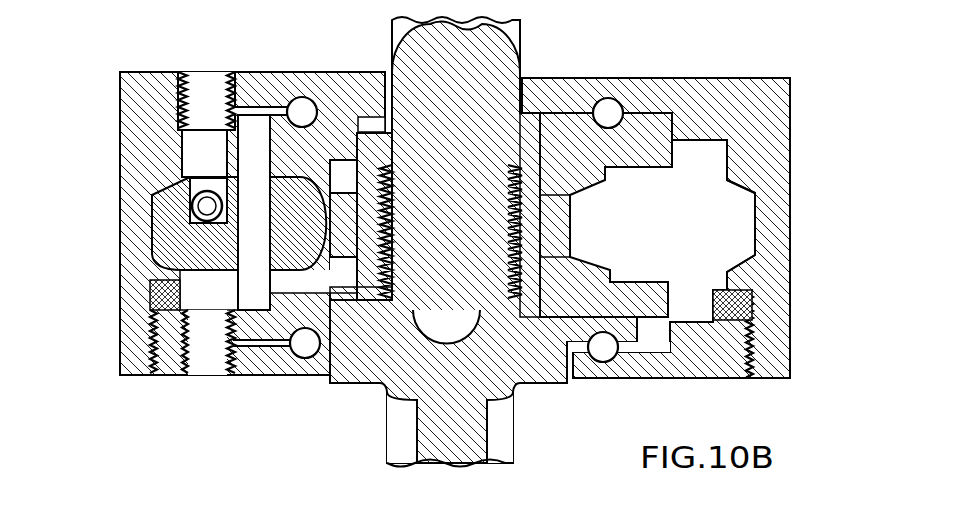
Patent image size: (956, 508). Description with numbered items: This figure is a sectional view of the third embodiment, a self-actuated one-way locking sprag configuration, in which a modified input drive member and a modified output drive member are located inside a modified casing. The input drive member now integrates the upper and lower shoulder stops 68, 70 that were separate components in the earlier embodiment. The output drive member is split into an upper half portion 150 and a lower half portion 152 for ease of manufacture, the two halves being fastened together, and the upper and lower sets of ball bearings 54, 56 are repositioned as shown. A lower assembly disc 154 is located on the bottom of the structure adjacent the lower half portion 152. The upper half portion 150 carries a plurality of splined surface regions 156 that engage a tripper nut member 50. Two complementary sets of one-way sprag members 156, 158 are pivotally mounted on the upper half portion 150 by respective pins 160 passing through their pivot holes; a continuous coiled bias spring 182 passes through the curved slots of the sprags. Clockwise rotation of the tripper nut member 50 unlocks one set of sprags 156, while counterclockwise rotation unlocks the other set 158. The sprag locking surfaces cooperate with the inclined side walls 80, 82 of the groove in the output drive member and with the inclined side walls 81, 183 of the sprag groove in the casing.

The tripper nut member 50 is at (543, 176).
The upper set of ball bearings 54 is at (298, 106).
The lower set of ball bearings 56 is at (303, 348).
The upper shoulder stop 68 is at (365, 240).
The lower shoulder stop 70 is at (367, 303).
The inclined side wall 80 is at (570, 195).
The inclined side wall 81 is at (792, 168).
The inclined side wall 82 is at (570, 257).
The upper half portion of the output drive member 150 is at (655, 113).
The lower half portion of the output drive member 152 is at (408, 388).
The lower assembly disc 154 is at (263, 376).
The one-way sprag member 156 is at (265, 170).
The one-way sprag member 158 is at (148, 199).
The pin 160 is at (240, 287).
The continuous coiled bias spring 182 is at (203, 207).
The inclined side wall 183 is at (746, 268).